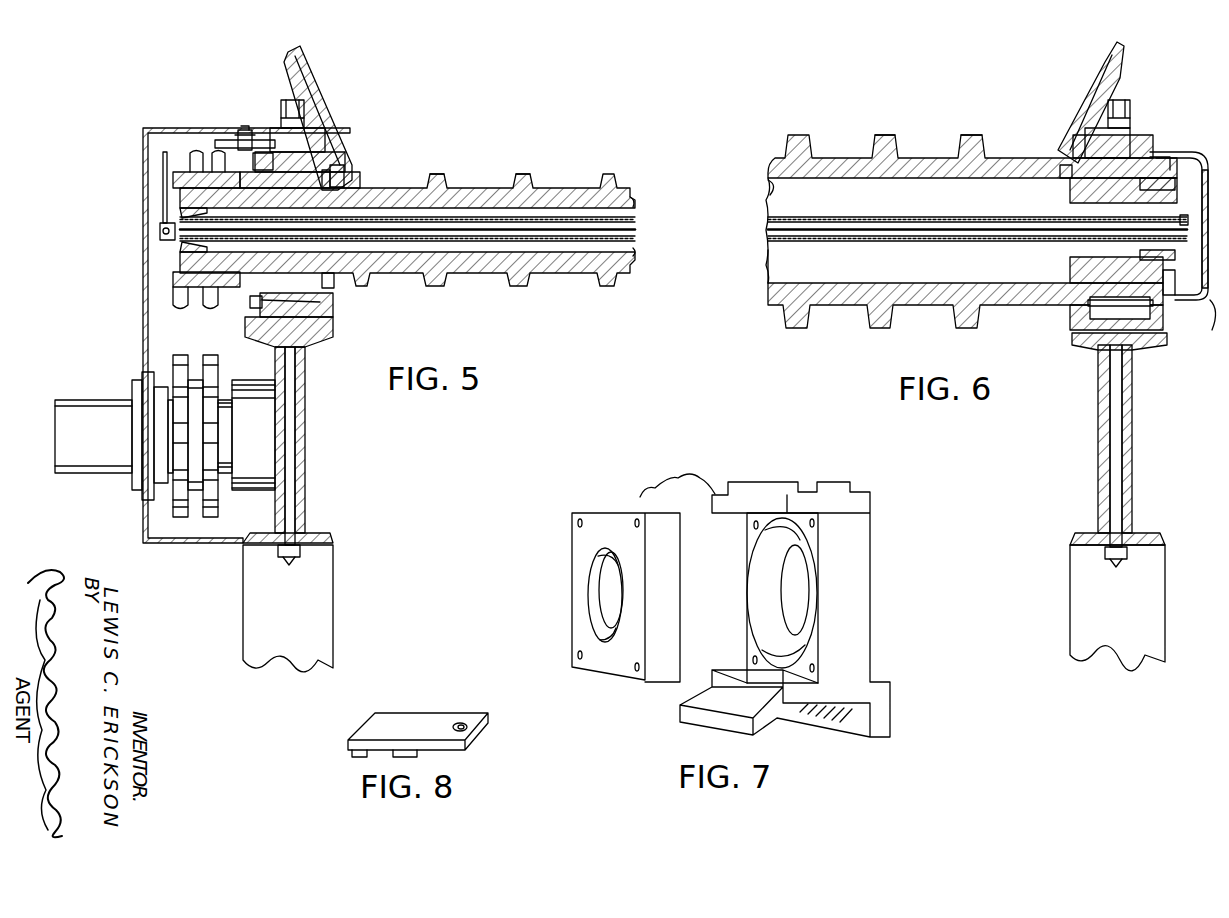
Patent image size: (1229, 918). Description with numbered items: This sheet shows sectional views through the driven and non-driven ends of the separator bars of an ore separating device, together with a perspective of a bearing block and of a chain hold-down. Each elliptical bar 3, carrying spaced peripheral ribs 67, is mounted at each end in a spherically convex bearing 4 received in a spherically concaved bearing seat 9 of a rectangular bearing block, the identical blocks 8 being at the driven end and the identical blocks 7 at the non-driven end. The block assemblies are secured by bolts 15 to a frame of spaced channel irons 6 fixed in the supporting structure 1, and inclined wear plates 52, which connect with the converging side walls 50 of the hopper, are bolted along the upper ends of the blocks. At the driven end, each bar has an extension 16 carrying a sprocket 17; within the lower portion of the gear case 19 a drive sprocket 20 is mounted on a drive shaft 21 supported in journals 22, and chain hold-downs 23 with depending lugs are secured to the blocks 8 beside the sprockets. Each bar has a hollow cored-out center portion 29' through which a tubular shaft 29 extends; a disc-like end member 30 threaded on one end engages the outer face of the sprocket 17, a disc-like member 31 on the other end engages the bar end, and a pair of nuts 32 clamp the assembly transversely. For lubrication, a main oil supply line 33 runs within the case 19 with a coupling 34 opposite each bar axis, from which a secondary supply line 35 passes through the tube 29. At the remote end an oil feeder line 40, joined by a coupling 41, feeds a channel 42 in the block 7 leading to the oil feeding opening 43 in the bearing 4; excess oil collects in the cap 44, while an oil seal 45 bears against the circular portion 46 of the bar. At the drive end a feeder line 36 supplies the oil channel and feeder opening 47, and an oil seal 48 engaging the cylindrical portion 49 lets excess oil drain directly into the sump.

In FIG. 5, the supporting structure 1 is at (318, 604).
In FIG. 6, the supporting structure 1 is at (1150, 582).
In FIG. 5, the bars 3 is at (555, 196).
In FIG. 6, the bars 3 is at (818, 172).
In FIG. 5, the bearing 4 is at (300, 312).
In FIG. 6, the bearing 4 is at (1130, 145).
In FIG. 5, the channel irons 6 is at (298, 438).
In FIG. 6, the channel irons 6 is at (1112, 418).
In FIG. 6, the bearing block 7 is at (1135, 328).
In FIG. 7, the bearing block 7 is at (858, 574).
In FIG. 5, the bearing block 8 is at (255, 318).
In FIG. 5, the bearing seat 9 is at (318, 298).
In FIG. 6, the bearing seat 9 is at (1095, 315).
In FIG. 7, the bearing seat 9 is at (600, 595).
In FIG. 5, the bolts 15 is at (290, 100).
In FIG. 6, the bolts 15 is at (1120, 105).
In FIG. 5, the extension 16 is at (186, 272).
In FIG. 5, the sprockets 17 is at (180, 290).
In FIG. 5, the gear case 19 is at (145, 365).
In FIG. 5, the drive sprocket 20 is at (200, 510).
In FIG. 5, the drive shaft 21 is at (92, 425).
In FIG. 5, the journals 22 is at (180, 500).
In FIG. 5, the chain hold-downs 23 is at (205, 140).
In FIG. 8, the chain hold-downs 23 is at (395, 725).
In FIG. 5, the tubular shaft 29 is at (659, 250).
In FIG. 6, the tubular shaft 29 is at (743, 265).
In FIG. 5, the hollow cored-out center portion 29' is at (648, 182).
In FIG. 6, the hollow cored-out center portion 29' is at (748, 176).
In FIG. 5, the disc-like end member 30 is at (182, 212).
In FIG. 6, the disc-like member 31 is at (1170, 285).
In FIG. 6, the nuts 32 is at (1175, 290).
In FIG. 5, the main oil supply line 33 is at (160, 229).
In FIG. 5, the coupling 34 is at (176, 248).
In FIG. 5, the secondary supply line 35 is at (400, 228).
In FIG. 6, the secondary supply line 35 is at (868, 232).
In FIG. 5, the feeder line 36 is at (160, 168).
In FIG. 6, the oil feeder line 40 is at (1205, 168).
In FIG. 6, the coupling 41 is at (1188, 255).
In FIG. 6, the channel 42 is at (1148, 178).
In FIG. 6, the oil feeding opening 43 is at (1165, 170).
In FIG. 6, the cap 44 is at (1208, 300).
In FIG. 6, the oil seal 45 is at (1085, 292).
In FIG. 6, the portion of the bars 46 is at (1055, 172).
In FIG. 5, the oil channel and feeder opening 47 is at (250, 145).
In FIG. 5, the oil seal 48 is at (345, 172).
In FIG. 5, the cylindrical portion 49 is at (350, 182).
In FIG. 5, the side walls 50 is at (322, 58).
In FIG. 6, the side walls 50 is at (1097, 70).
In FIG. 5, the wear plates 52 is at (338, 112).
In FIG. 6, the wear plates 52 is at (1088, 108).
In FIG. 5, the peripheral ribs 67 is at (450, 180).
In FIG. 6, the peripheral ribs 67 is at (965, 148).